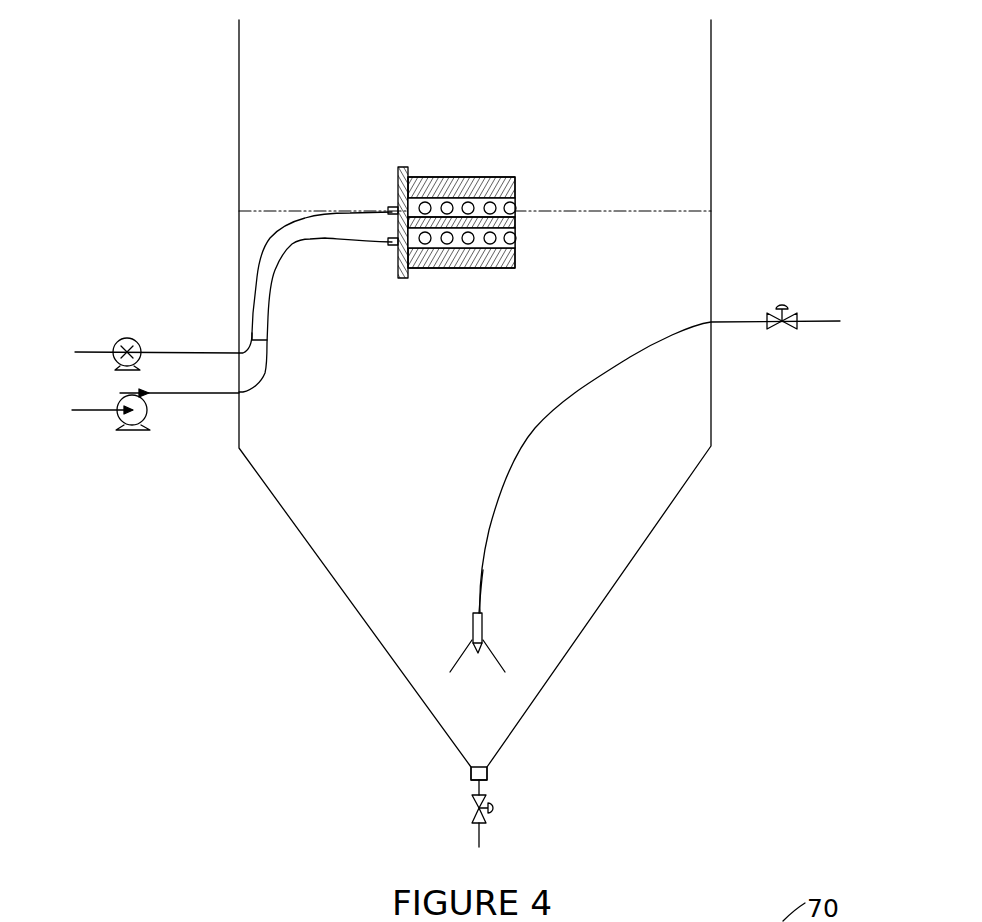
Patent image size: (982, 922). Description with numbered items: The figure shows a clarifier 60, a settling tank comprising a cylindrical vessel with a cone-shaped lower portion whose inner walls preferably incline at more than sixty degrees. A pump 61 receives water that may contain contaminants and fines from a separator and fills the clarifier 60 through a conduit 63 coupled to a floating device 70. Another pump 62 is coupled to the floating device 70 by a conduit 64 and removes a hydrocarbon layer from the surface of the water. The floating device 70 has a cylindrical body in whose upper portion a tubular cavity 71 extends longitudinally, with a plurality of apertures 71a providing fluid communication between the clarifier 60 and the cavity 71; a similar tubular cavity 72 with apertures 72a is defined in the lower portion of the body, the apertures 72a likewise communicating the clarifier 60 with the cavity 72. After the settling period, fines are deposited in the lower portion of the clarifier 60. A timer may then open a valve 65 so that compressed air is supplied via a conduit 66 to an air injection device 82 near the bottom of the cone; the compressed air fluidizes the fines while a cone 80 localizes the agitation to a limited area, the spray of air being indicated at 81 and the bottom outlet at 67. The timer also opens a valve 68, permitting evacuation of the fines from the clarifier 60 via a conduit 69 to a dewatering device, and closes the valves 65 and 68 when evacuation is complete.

The clarifier 60 is at (237, 45).
The pump 61 is at (132, 430).
The pump 62 is at (121, 342).
The conduit 63 is at (252, 333).
The conduit 64 is at (295, 225).
The valve 65 is at (797, 324).
The conduit 66 is at (723, 325).
The bottom outlet 67 is at (488, 768).
The valve 68 is at (493, 807).
The conduit 69 is at (482, 837).
The floating device 70 is at (619, 146).
The tubular cavity 71 is at (517, 205).
The apertures 71a is at (520, 205).
The tubular cavity 72 is at (517, 227).
The apertures 72a is at (519, 241).
The cone 80 is at (503, 660).
The spray cone 81 is at (477, 647).
The air injection device 82 is at (473, 614).